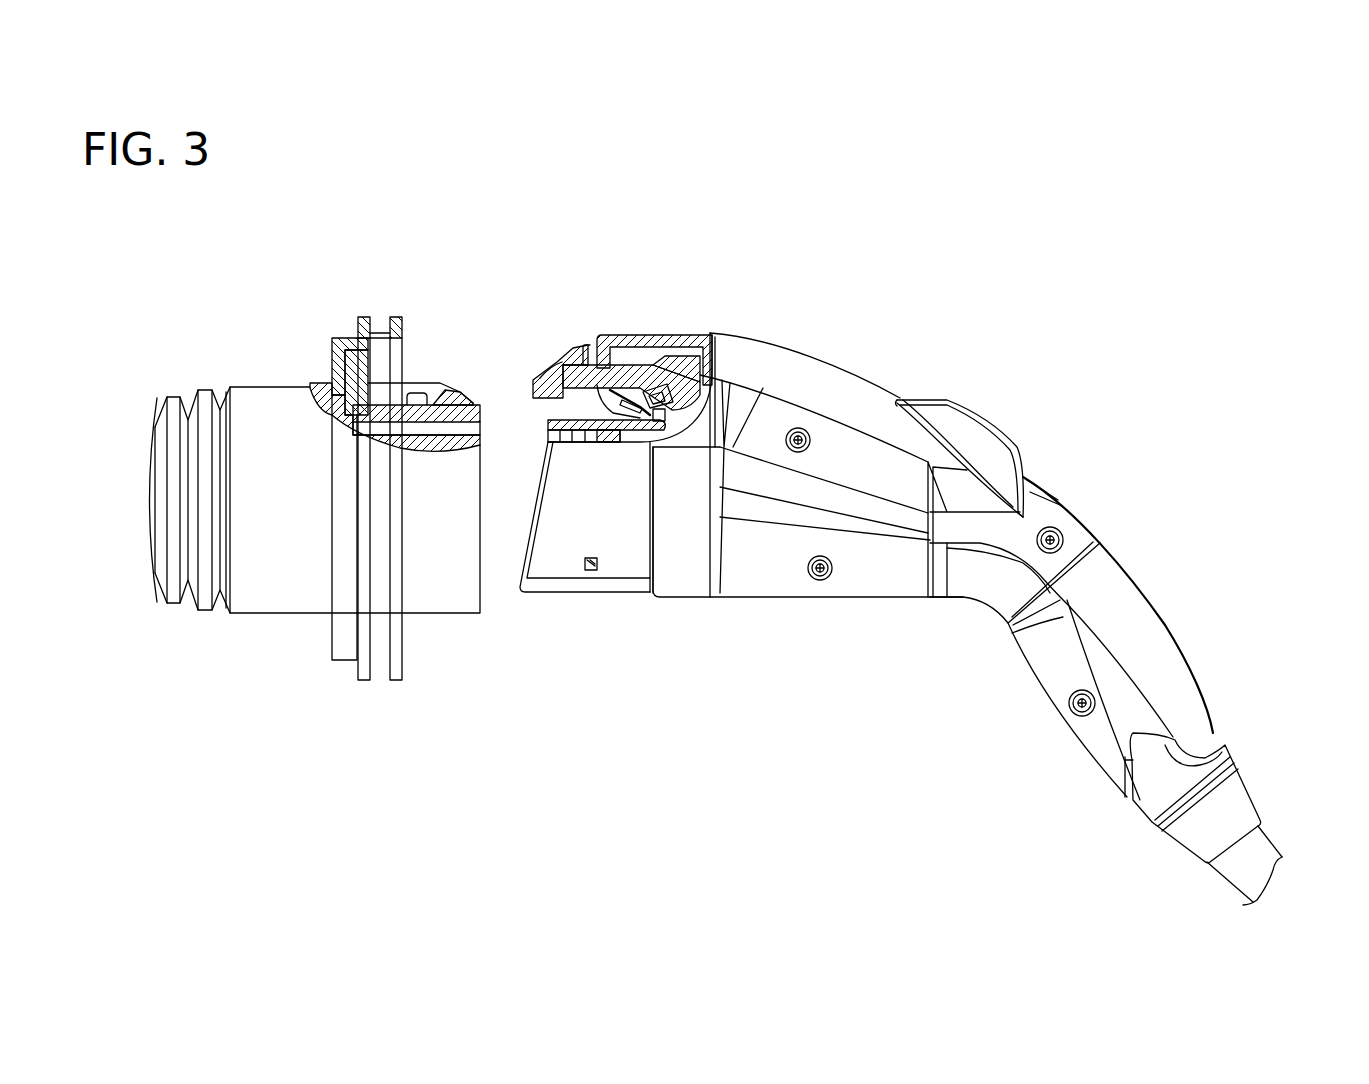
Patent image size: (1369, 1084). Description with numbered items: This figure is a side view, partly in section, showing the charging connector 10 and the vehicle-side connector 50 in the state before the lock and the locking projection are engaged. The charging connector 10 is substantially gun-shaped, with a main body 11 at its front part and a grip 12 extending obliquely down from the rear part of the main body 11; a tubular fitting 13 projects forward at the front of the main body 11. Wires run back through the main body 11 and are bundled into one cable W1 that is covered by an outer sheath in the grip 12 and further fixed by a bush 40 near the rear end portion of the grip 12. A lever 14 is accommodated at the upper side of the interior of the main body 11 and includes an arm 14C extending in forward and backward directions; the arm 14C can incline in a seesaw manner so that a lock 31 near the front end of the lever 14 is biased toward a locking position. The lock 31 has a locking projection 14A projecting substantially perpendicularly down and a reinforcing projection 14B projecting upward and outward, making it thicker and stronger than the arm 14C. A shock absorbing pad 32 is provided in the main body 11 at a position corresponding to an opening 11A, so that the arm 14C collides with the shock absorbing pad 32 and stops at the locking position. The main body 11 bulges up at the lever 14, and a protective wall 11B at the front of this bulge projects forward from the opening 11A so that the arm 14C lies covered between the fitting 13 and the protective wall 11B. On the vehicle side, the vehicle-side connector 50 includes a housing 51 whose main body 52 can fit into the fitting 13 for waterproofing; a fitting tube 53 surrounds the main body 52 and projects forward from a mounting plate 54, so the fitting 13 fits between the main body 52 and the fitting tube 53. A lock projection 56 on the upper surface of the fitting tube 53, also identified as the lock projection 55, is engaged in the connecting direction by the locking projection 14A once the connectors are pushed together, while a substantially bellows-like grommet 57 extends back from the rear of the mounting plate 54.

The charging connector 10 is at (809, 269).
The main body 11 is at (874, 352).
The opening 11A is at (652, 533).
The protective wall 11B is at (628, 337).
The grip 12 is at (1127, 540).
The tubular fitting 13 is at (610, 563).
The lever 14 is at (675, 357).
The locking projection 14A is at (533, 397).
The reinforcing projection 14B is at (587, 347).
The arm 14C is at (643, 373).
The lock 31 is at (557, 370).
The shock absorbing pad 32 is at (665, 402).
The bush 40 is at (1227, 808).
The cable W1 is at (1263, 853).
The vehicle-side connector 50 is at (313, 241).
The housing 51 is at (448, 654).
The main body 52 is at (486, 443).
The fitting tube 53 is at (387, 385).
The mounting plate 54 is at (353, 352).
The lock projection 55 is at (440, 392).
The lock projection 56 is at (335, 368).
The grommet 57 is at (202, 390).